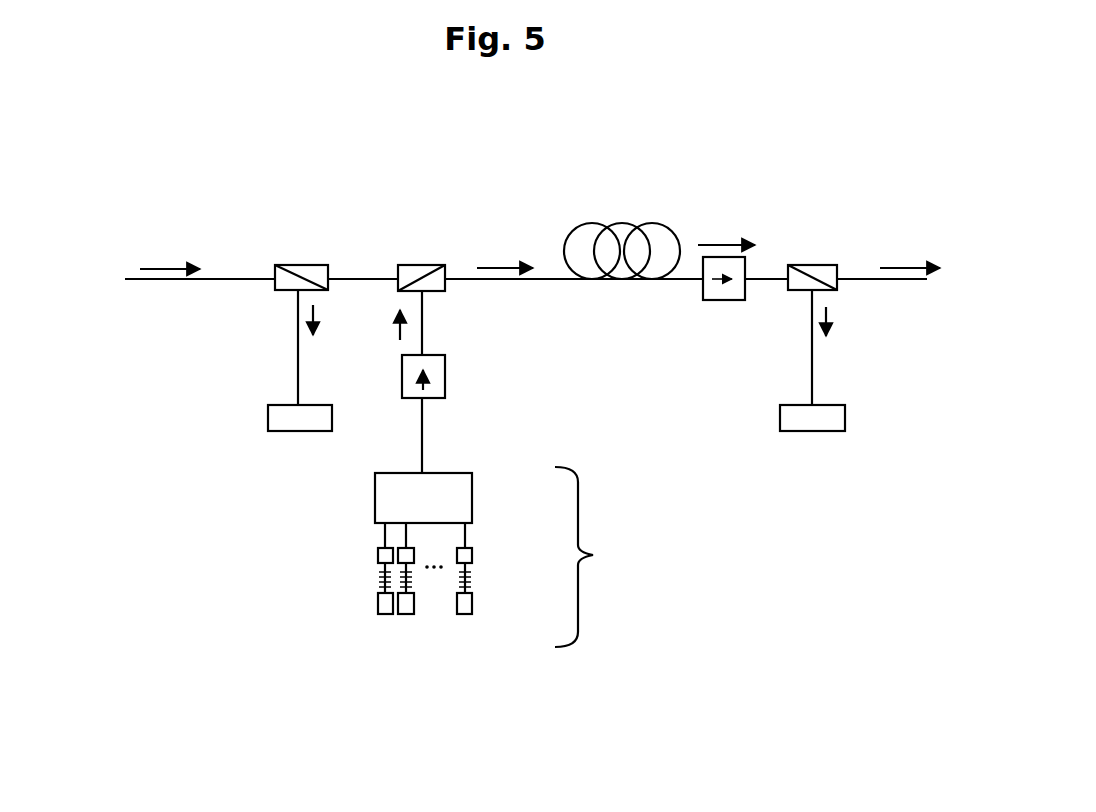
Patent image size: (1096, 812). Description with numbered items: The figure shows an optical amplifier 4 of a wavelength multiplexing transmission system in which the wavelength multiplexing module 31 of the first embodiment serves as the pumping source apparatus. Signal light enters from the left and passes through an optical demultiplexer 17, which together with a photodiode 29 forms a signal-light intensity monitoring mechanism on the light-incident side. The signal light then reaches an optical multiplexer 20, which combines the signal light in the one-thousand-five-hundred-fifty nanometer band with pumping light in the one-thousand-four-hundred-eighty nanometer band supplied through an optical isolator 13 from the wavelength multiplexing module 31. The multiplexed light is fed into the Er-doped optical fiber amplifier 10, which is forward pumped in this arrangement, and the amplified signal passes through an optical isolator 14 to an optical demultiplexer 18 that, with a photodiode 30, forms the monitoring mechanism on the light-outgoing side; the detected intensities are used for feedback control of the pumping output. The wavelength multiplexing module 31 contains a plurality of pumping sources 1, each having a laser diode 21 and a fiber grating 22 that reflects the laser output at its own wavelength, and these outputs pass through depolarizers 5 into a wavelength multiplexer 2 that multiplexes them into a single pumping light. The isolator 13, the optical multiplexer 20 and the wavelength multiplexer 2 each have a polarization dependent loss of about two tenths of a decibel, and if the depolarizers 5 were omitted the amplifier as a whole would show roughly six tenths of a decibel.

The pumping source 1 is at (414, 608).
The wavelength multiplexer 2 is at (472, 495).
The optical amplifier 4 is at (578, 190).
The depolarizer 5 is at (378, 555).
The Er-doped optical fiber amplifier 10 is at (678, 233).
The optical isolator 13 is at (445, 388).
The optical isolator 14 is at (727, 300).
The optical demultiplexer 17 is at (275, 284).
The optical demultiplexer 18 is at (837, 288).
The optical multiplexer 20 is at (418, 265).
The laser diode 21 is at (378, 612).
The fiber grating 22 is at (378, 583).
The photodiode 29 is at (268, 410).
The photodiode 30 is at (845, 418).
The wavelength multiplexing module 31 is at (732, 557).